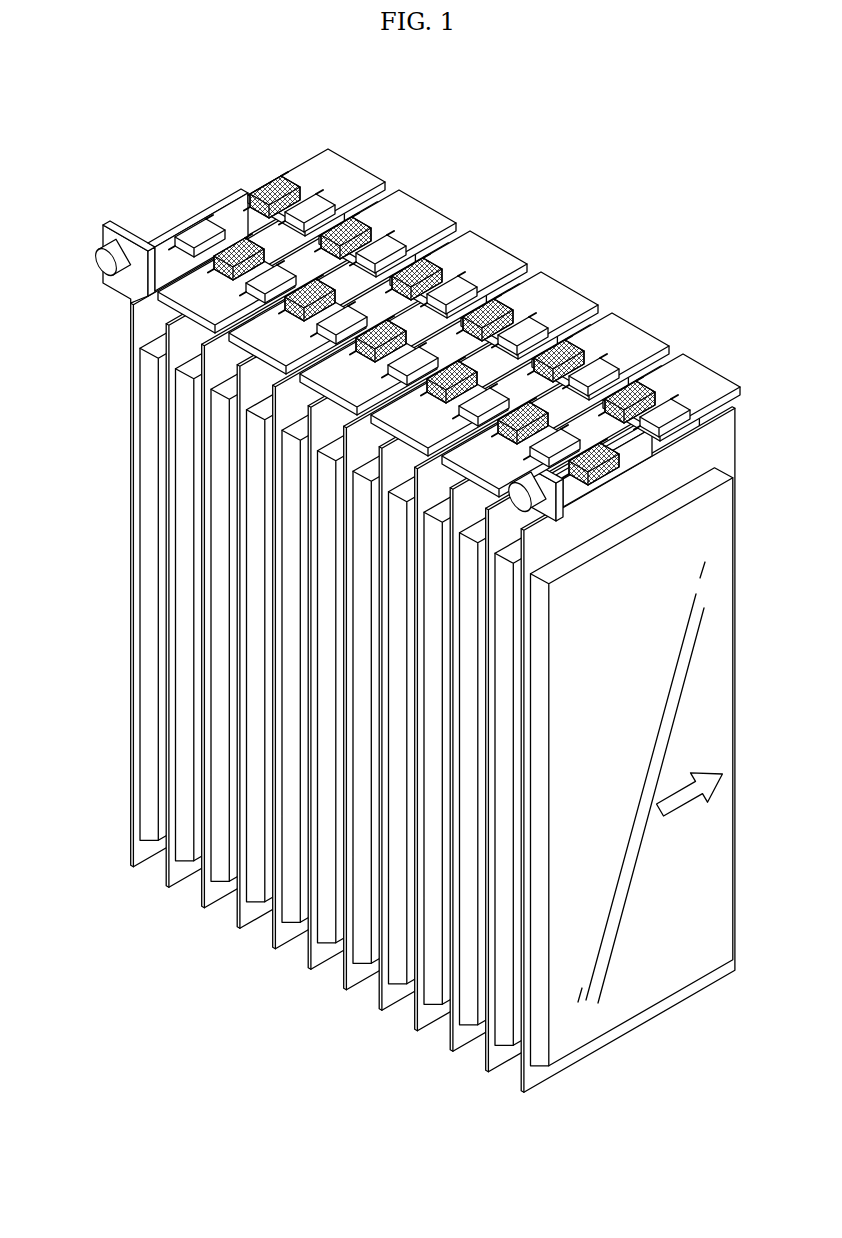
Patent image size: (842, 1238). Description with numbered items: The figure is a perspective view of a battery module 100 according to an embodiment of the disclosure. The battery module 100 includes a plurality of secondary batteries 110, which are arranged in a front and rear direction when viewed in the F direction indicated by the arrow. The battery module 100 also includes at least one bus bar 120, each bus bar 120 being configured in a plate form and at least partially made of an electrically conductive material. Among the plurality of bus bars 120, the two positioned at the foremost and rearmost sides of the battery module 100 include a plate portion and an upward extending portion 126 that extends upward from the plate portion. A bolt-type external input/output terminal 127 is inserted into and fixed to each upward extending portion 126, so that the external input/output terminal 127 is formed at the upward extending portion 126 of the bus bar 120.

The battery module 100 is at (219, 95).
The secondary batteries 110 is at (207, 893).
The bus bar 120 is at (422, 215).
The upward extending portion 126 is at (102, 240).
The external input/output terminal 127 is at (108, 274).